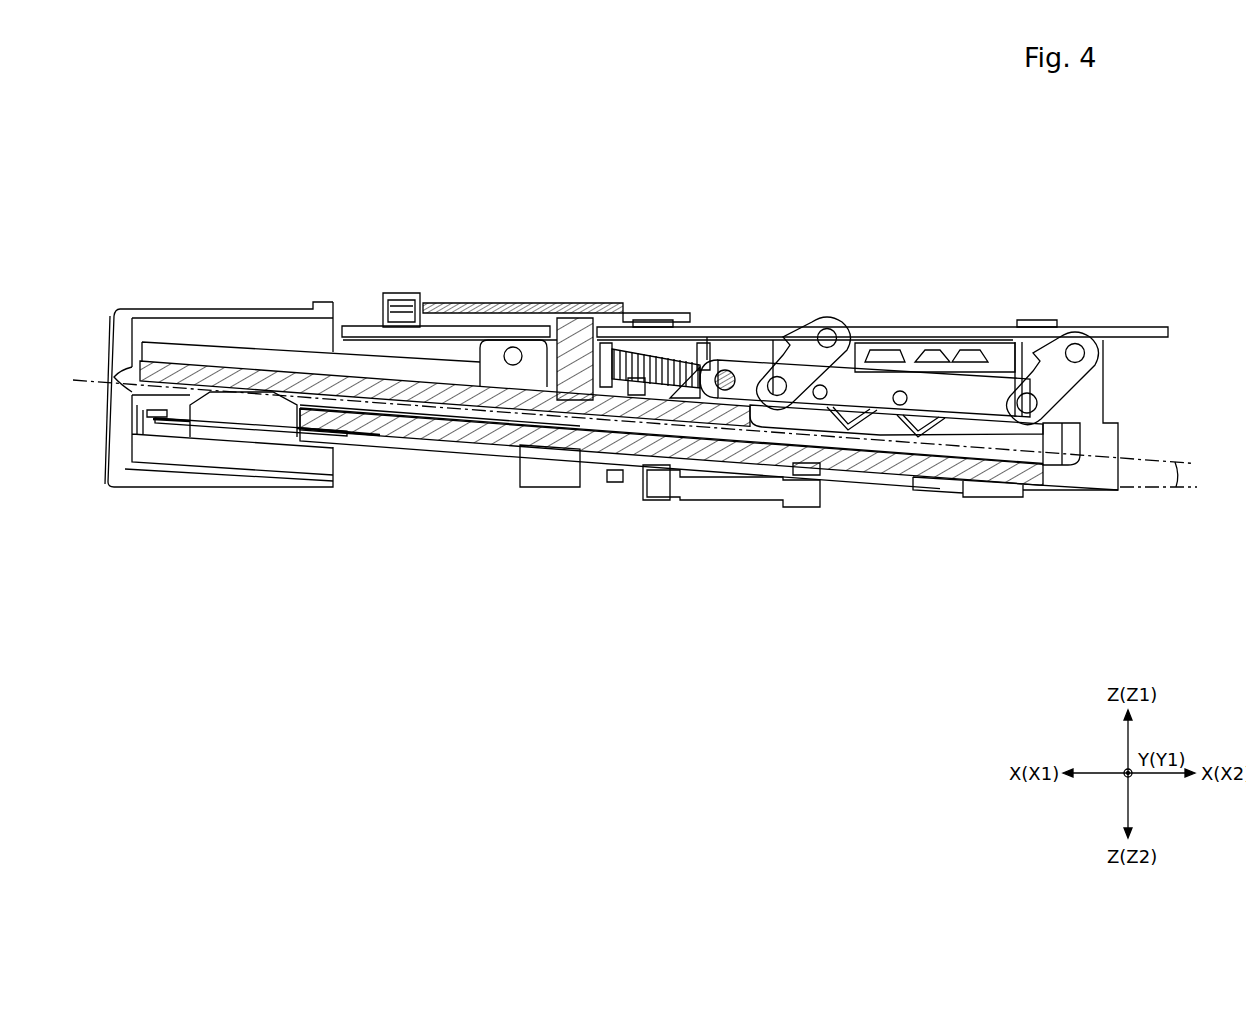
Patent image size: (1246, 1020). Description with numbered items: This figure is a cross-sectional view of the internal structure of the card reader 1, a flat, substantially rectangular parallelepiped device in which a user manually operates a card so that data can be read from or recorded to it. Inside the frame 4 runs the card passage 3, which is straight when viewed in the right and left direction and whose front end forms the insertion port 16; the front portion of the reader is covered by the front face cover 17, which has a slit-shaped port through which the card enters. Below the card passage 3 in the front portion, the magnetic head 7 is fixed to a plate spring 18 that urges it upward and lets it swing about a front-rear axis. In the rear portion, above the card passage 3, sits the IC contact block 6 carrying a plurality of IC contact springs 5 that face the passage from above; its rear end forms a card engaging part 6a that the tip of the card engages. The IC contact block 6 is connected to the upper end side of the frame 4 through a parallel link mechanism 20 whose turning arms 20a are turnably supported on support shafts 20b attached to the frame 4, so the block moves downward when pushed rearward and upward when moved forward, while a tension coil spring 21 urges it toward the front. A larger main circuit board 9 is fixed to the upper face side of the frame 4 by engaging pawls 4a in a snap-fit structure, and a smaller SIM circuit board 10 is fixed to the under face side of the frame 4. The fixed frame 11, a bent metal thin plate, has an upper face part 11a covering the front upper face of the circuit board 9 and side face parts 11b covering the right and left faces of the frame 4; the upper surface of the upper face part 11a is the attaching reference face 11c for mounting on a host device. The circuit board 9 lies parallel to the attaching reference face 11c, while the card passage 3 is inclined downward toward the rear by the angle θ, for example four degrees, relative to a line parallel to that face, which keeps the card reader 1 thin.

The card reader 1 is at (1052, 218).
The card passage 3 is at (728, 438).
The frame 4 is at (455, 440).
The engaging pawl 4a is at (655, 320).
The IC contact spring 5 is at (848, 412).
The IC contact block 6 is at (975, 372).
The card engaging part 6a is at (1055, 462).
The magnetic head 7 is at (242, 372).
The circuit board 9 is at (1135, 327).
The circuit board 10 is at (998, 480).
The fixed frame 11 is at (685, 310).
The upper face part 11a is at (630, 313).
The side face part 11b is at (885, 343).
The attaching reference face 11c is at (515, 303).
The insertion port 16 is at (118, 374).
The front face cover 17 is at (287, 303).
The plate spring 18 is at (352, 438).
The parallel link mechanism 20 is at (1088, 385).
The turning arm 20a is at (803, 330).
The support shaft 20b is at (828, 336).
The tension coil spring 21 is at (672, 370).